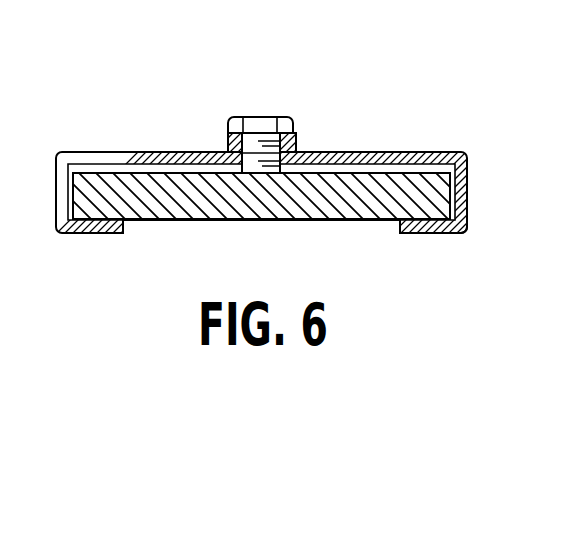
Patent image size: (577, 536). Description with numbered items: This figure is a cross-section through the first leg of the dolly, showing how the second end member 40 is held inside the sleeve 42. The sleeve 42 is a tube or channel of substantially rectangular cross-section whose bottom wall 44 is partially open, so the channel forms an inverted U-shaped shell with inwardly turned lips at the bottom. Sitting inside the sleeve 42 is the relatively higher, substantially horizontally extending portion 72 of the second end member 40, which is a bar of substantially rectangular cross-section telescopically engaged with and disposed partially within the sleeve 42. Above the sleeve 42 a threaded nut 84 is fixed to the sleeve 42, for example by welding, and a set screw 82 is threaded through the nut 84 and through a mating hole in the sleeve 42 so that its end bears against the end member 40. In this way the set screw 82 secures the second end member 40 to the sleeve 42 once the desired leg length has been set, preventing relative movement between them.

The second end member 40 is at (189, 220).
The sleeve 42 is at (112, 152).
The bottom wall 44 is at (425, 234).
The relatively higher, substantially horizontally extending portion 72 is at (330, 213).
The set screw 82 is at (258, 116).
The threaded nut 84 is at (228, 140).